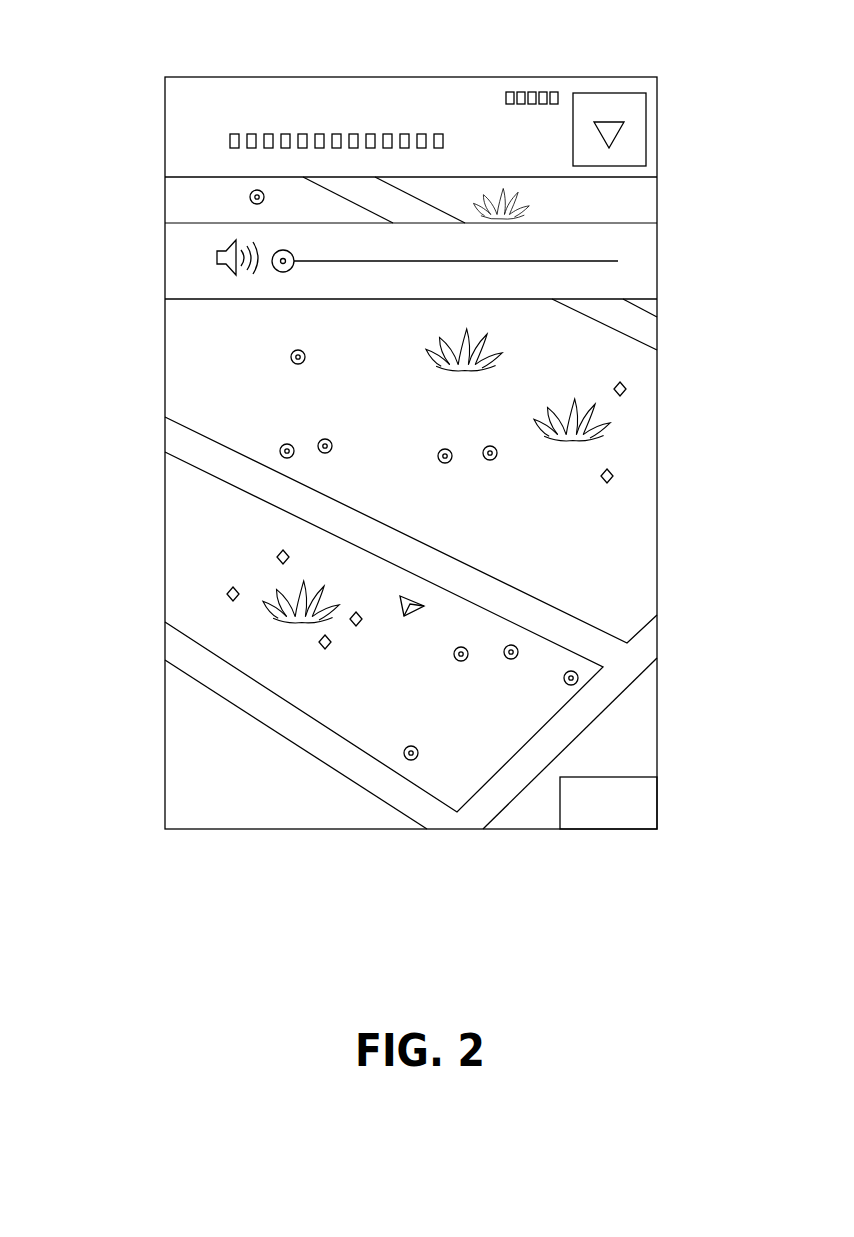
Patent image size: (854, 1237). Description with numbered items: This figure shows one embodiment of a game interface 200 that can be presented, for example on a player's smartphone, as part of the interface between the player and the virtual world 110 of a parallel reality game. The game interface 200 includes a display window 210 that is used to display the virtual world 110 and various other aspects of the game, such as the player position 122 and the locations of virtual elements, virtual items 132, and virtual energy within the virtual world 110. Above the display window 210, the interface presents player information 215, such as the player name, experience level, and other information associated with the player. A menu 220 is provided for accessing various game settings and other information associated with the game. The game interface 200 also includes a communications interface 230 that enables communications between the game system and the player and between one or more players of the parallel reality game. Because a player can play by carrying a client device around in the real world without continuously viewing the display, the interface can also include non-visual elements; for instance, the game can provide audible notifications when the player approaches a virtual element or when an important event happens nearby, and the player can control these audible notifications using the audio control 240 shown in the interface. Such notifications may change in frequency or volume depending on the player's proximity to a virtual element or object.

The game interface 200 is at (424, 27).
The player information 215 is at (177, 97).
The menu 220 is at (637, 128).
The display window 210 is at (650, 207).
The audio control 240 is at (177, 244).
The virtual world 110 is at (645, 540).
The virtual items 132 is at (278, 554).
The player position 122 is at (404, 612).
The communications interface 230 is at (650, 807).